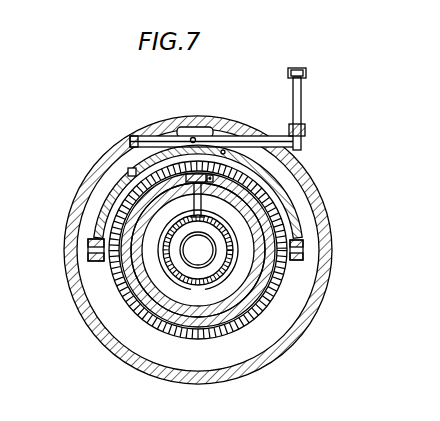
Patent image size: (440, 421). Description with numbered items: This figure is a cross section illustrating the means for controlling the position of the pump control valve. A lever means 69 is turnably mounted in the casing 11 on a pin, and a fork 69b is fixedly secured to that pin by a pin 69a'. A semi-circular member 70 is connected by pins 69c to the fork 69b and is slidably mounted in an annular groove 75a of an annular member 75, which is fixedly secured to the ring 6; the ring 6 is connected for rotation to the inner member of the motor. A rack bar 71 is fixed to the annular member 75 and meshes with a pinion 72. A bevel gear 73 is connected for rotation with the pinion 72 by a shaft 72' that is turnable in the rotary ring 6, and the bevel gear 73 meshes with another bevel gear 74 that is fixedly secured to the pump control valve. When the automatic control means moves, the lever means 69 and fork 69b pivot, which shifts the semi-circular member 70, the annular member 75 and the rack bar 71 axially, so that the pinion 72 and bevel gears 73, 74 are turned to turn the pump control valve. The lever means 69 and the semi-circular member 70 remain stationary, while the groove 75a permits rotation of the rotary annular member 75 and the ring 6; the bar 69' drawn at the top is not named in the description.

The ring 6 is at (255, 223).
The casing 11 is at (292, 348).
The lever means 69 is at (315, 109).
The bar 69' is at (244, 134).
The pin 69a' is at (202, 124).
The fork 69b is at (272, 177).
The pins 69c is at (300, 249).
The semi-circular member 70 is at (272, 297).
The rack bar 71 is at (223, 152).
The pinion 72 is at (185, 154).
The shaft 72' is at (97, 163).
The bevel gear 73 is at (208, 218).
The bevel gear 74 is at (207, 283).
The annular member 75 is at (250, 205).
The annular groove 75a is at (122, 203).